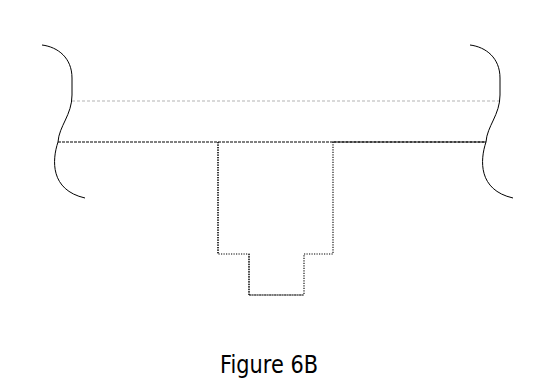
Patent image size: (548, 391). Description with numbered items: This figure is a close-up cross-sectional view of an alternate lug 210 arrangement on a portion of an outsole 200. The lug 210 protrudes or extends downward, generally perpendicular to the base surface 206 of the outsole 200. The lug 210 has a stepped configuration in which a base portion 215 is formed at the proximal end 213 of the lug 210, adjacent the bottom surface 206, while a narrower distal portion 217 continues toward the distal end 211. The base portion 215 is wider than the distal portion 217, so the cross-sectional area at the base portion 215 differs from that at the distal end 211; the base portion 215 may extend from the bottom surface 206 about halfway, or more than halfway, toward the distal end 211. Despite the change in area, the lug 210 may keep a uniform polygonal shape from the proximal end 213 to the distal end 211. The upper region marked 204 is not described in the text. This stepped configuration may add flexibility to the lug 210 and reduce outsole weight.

The outsole 200 is at (153, 115).
The upper layer 204 is at (351, 100).
The proximal end 213 is at (276, 142).
The base surface 206 is at (389, 142).
The base portion 215 is at (277, 173).
The lug 210 is at (233, 198).
The distal portion 217 is at (277, 273).
The distal end 211 is at (277, 296).